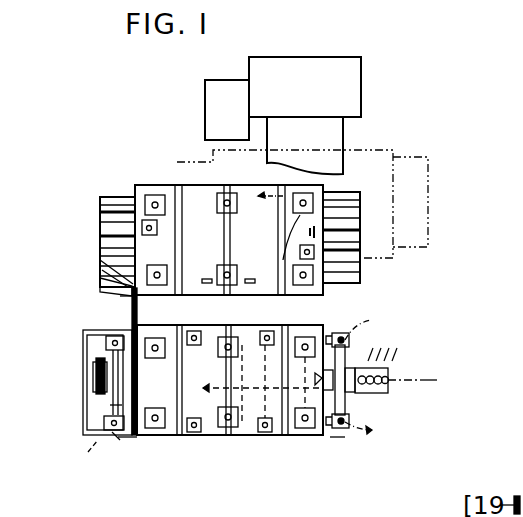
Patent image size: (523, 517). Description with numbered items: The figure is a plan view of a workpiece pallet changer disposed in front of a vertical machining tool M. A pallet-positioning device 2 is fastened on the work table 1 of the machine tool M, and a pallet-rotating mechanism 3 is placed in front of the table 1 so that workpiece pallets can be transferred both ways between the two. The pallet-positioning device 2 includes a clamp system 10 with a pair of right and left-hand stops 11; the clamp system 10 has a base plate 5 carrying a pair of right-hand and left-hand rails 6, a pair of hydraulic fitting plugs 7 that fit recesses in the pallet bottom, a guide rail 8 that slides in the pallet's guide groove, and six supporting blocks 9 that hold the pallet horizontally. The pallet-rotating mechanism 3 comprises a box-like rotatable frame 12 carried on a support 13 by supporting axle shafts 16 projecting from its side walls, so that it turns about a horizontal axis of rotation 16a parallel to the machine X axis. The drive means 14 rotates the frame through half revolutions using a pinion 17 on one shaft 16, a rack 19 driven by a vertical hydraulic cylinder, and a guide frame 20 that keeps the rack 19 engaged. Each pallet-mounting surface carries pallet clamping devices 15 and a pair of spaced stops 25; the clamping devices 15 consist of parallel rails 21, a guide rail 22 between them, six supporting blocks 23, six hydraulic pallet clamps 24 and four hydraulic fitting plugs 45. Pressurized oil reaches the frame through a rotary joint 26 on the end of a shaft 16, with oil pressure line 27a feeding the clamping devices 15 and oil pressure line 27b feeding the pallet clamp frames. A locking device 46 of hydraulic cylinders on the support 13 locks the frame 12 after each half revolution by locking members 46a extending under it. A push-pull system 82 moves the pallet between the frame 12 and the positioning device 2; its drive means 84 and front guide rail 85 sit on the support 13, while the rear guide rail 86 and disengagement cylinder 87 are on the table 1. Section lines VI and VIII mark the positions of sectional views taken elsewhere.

The vertical machining tool M is at (325, 65).
The work table 1 is at (120, 193).
The pallet-positioning device 2 is at (236, 186).
The pallet-rotating mechanism 3 is at (165, 447).
The base plate 5 is at (195, 290).
The right-hand and left-hand rails 6 is at (182, 245).
The hydraulic fitting plugs 7 is at (158, 228).
The guide rail 8 is at (232, 240).
The supporting blocks 9 is at (283, 260).
The clamp system 10 is at (157, 285).
The stops 11 is at (250, 285).
The rotatable frame 12 is at (140, 440).
The support 13 is at (110, 427).
The drive means 14 is at (47, 328).
The pallet clamping devices 15 is at (331, 478).
The supporting axle shafts 16 is at (110, 410).
The horizontal axis of rotation 16a is at (428, 378).
The pinion 17 is at (98, 383).
The rack 19 is at (98, 368).
The guide frame 20 is at (105, 340).
The parallel rails 21 is at (182, 362).
The guide rail 22 is at (229, 370).
The supporting blocks 23 is at (153, 406).
The hydraulic pallet clamps 24 is at (303, 428).
The stops 25 is at (195, 434).
The rotary joint 26 is at (380, 393).
The oil pressure line 27a is at (350, 406).
The oil pressure line 27b is at (298, 328).
The hydraulic fitting plugs 45 is at (265, 435).
The locking device 46 is at (350, 332).
The locking members 46a is at (340, 333).
The push-pull system 82 is at (118, 440).
The drive means 84 is at (92, 452).
The front guide rail 85 is at (128, 322).
The rear guide rail 86 is at (100, 240).
The cylinder for disengagement 87 is at (100, 262).
The section VI is at (108, 410).
The section VIII is at (98, 287).